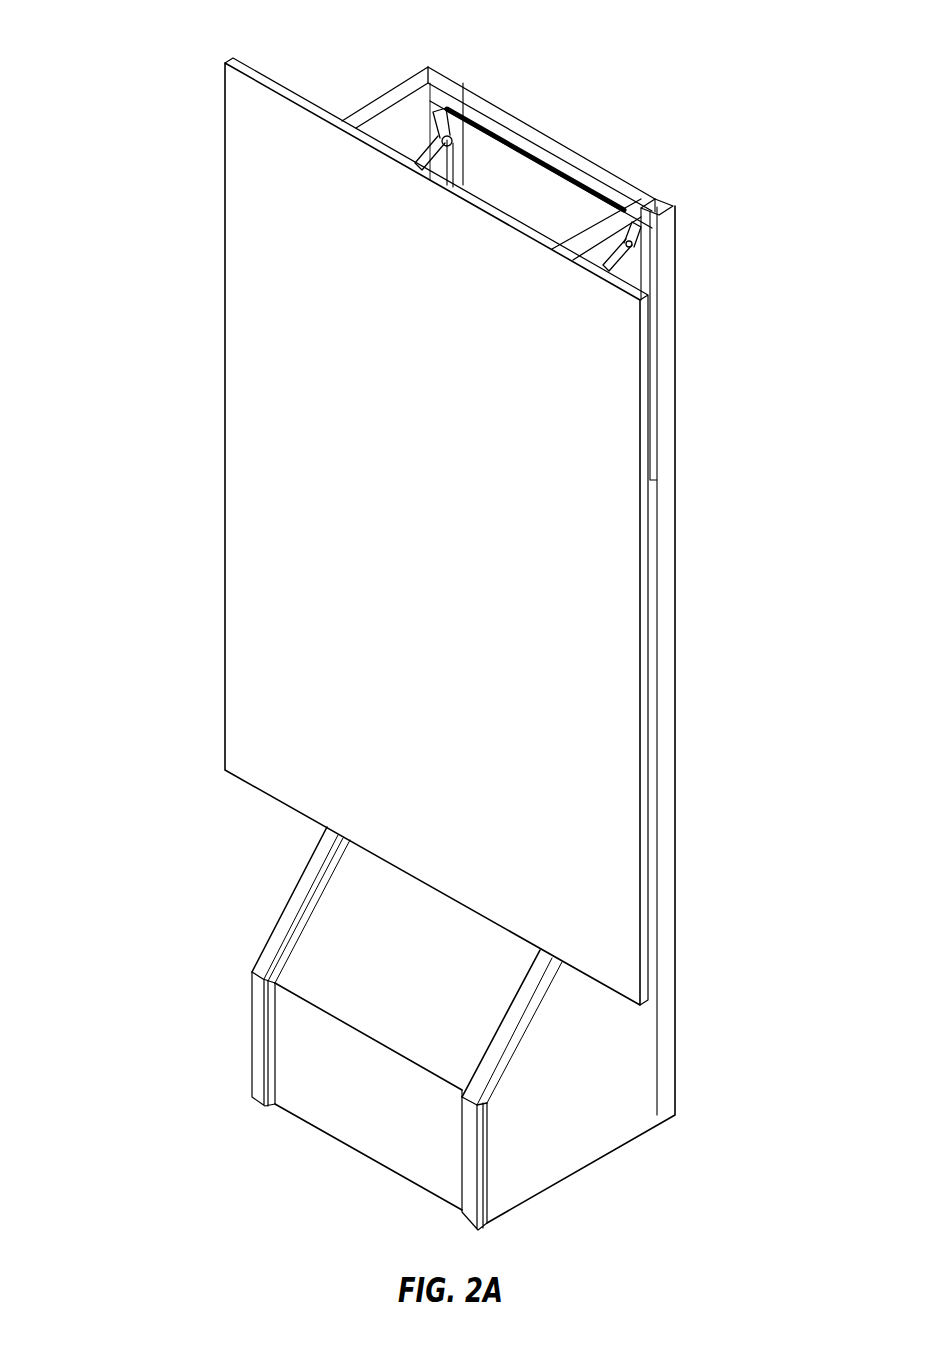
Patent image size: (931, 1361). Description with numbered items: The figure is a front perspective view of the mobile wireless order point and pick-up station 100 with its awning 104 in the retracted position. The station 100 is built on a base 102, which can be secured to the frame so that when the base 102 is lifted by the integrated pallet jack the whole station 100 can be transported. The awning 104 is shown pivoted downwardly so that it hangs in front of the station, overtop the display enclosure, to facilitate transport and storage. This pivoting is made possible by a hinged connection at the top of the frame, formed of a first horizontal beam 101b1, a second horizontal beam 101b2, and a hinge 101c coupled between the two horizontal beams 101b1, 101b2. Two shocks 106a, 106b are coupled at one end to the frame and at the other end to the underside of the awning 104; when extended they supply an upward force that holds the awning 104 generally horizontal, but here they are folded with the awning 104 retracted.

The station 100 is at (118, 104).
The base 102 is at (637, 1075).
The awning 104 is at (225, 681).
The first horizontal beam 101b1 is at (620, 168).
The second horizontal beam 101b2 is at (458, 96).
The hinge 101c is at (590, 168).
The shock 106a is at (620, 265).
The shock 106b is at (417, 148).